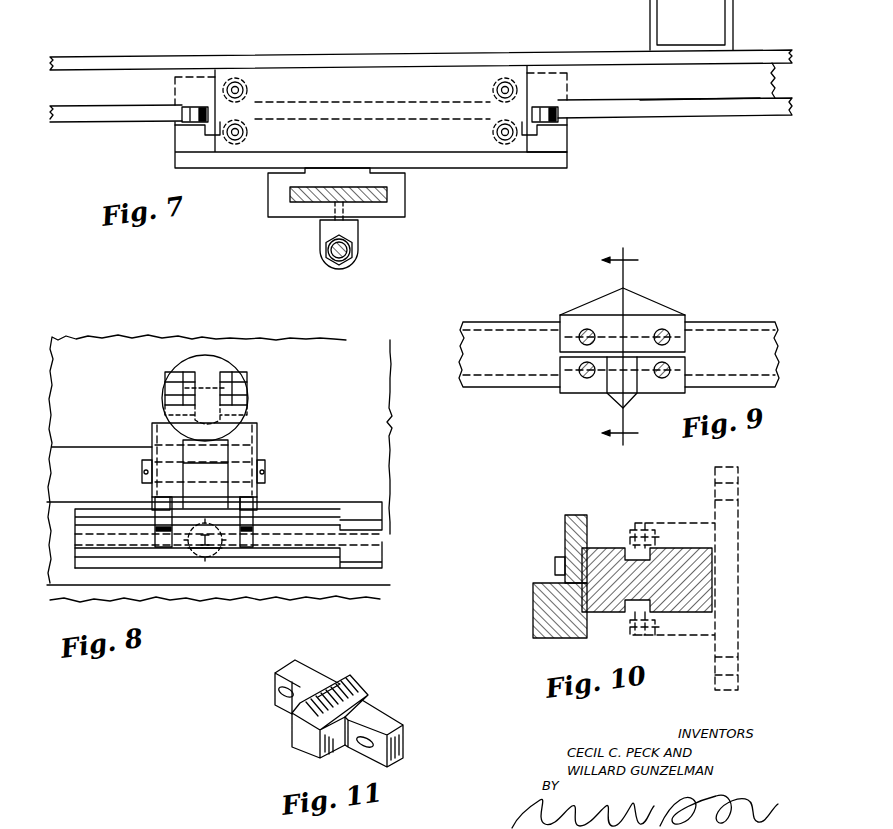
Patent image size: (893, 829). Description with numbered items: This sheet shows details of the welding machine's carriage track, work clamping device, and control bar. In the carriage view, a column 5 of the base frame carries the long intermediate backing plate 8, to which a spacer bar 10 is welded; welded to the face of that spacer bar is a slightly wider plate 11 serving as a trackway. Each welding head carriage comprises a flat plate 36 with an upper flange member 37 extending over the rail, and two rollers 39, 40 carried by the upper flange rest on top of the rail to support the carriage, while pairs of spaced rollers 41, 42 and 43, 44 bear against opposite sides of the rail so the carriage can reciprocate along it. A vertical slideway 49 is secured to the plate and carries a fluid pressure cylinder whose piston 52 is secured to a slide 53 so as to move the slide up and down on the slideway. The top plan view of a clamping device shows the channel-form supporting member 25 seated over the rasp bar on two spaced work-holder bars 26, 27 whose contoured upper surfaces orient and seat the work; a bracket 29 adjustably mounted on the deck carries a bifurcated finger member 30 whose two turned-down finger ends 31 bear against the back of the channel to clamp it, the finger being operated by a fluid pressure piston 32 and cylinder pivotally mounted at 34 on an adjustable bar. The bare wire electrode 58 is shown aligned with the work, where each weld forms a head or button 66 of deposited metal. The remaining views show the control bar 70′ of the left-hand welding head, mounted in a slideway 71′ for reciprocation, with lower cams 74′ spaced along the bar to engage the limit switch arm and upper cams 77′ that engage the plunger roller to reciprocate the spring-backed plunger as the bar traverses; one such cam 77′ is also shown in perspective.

In FIG. 7, the column 5 is at (728, 18).
In FIG. 7, the backing plate 8 is at (125, 59).
In FIG. 7, the spacer bar 10 is at (713, 85).
In FIG. 9, the spacer bar 10 is at (612, 340).
In FIG. 7, the plate 11 is at (658, 108).
In FIG. 7, the pivot 34 is at (372, 6).
In FIG. 7, the flat plate 36 is at (547, 166).
In FIG. 7, the upper flange member 37 is at (445, 133).
In FIG. 7, the roller 39 is at (195, 107).
In FIG. 7, the roller 40 is at (543, 107).
In FIG. 7, the roller 41 is at (247, 82).
In FIG. 7, the roller 42 is at (235, 145).
In FIG. 7, the roller 43 is at (493, 82).
In FIG. 7, the roller 44 is at (501, 145).
In FIG. 7, the vertical slideway 49 is at (372, 202).
In FIG. 7, the piston 52 is at (356, 256).
In FIG. 7, the slide 53 is at (282, 210).
In FIG. 8, the channel-form supporting member 25 is at (318, 516).
In FIG. 8, the bar 26 is at (367, 558).
In FIG. 8, the bar 27 is at (383, 521).
In FIG. 8, the bracket 29 is at (212, 456).
In FIG. 8, the bifurcated finger member 30 is at (247, 442).
In FIG. 8, the finger end 31 is at (165, 530).
In FIG. 8, the fluid pressure piston 32 is at (193, 370).
In FIG. 8, the bare wire electrode 58 is at (212, 580).
In FIG. 8, the weld head or button 66 is at (201, 576).
In FIG. 9, the control bar 70′ is at (737, 332).
In FIG. 10, the control bar 70′ is at (613, 548).
In FIG. 10, the slideway 71′ is at (672, 522).
In FIG. 9, the lower cam 74′ is at (612, 398).
In FIG. 10, the lower cam 74′ is at (535, 637).
In FIG. 9, the upper cam 77′ is at (645, 300).
In FIG. 10, the upper cam 77′ is at (566, 530).
In FIG. 11, the upper cam 77′ is at (342, 698).